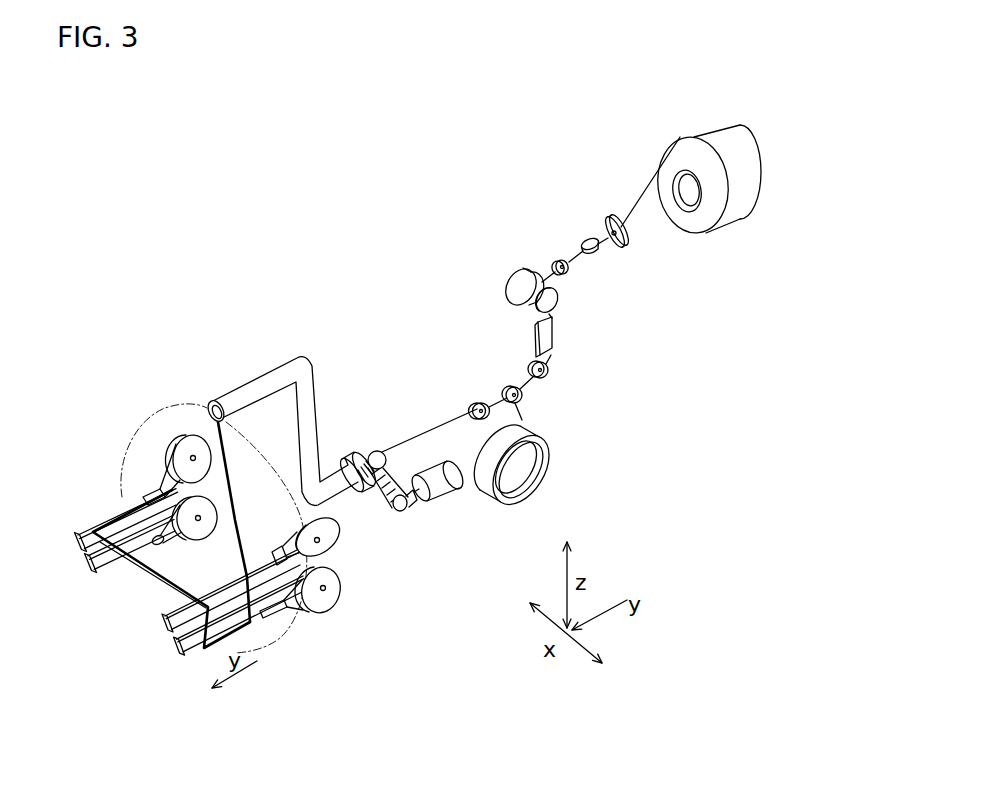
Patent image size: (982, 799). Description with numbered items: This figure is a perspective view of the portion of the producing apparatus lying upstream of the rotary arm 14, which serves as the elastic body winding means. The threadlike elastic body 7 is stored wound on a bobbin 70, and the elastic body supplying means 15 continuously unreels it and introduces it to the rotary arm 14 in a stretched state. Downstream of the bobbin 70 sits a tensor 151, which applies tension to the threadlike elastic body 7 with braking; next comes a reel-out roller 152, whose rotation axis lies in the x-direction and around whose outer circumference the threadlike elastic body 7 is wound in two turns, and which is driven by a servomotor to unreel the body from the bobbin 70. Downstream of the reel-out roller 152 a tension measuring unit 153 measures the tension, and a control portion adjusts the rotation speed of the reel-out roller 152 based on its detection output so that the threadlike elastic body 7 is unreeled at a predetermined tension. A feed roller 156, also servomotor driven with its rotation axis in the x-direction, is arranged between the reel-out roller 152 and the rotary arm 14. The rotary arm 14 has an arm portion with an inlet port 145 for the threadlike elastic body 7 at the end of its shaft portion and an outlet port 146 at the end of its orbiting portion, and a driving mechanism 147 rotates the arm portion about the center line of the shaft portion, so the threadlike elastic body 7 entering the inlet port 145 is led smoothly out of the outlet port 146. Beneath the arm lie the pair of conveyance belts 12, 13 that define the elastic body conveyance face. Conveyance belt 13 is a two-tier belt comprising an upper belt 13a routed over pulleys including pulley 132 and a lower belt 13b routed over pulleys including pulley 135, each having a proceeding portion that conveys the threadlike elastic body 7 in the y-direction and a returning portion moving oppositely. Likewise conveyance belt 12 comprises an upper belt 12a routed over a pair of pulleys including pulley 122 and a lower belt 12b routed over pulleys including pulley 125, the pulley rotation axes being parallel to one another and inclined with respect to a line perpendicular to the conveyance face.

The threadlike elastic body 7 is at (637, 197).
The bobbin 70 is at (720, 150).
The tensor 151 is at (598, 249).
The reel-out roller 152 is at (553, 303).
The tension measuring unit 153 is at (555, 338).
The elastic body supplying means 15 is at (604, 431).
The feed roller 156 is at (548, 458).
The rotary arm 14 is at (250, 365).
The outlet port 146 is at (208, 410).
The inlet port 145 is at (383, 456).
The driving mechanism 147 is at (421, 518).
The conveyance belt 13 is at (97, 524).
The upper belt 13a is at (90, 543).
The lower belt 13b is at (103, 558).
The pulley 132 is at (193, 436).
The pulley 135 is at (200, 523).
The conveyance belt 12 is at (184, 613).
The upper belt 12a is at (170, 625).
The lower belt 12b is at (183, 648).
The pulley 122 is at (328, 540).
The pulley 125 is at (332, 607).